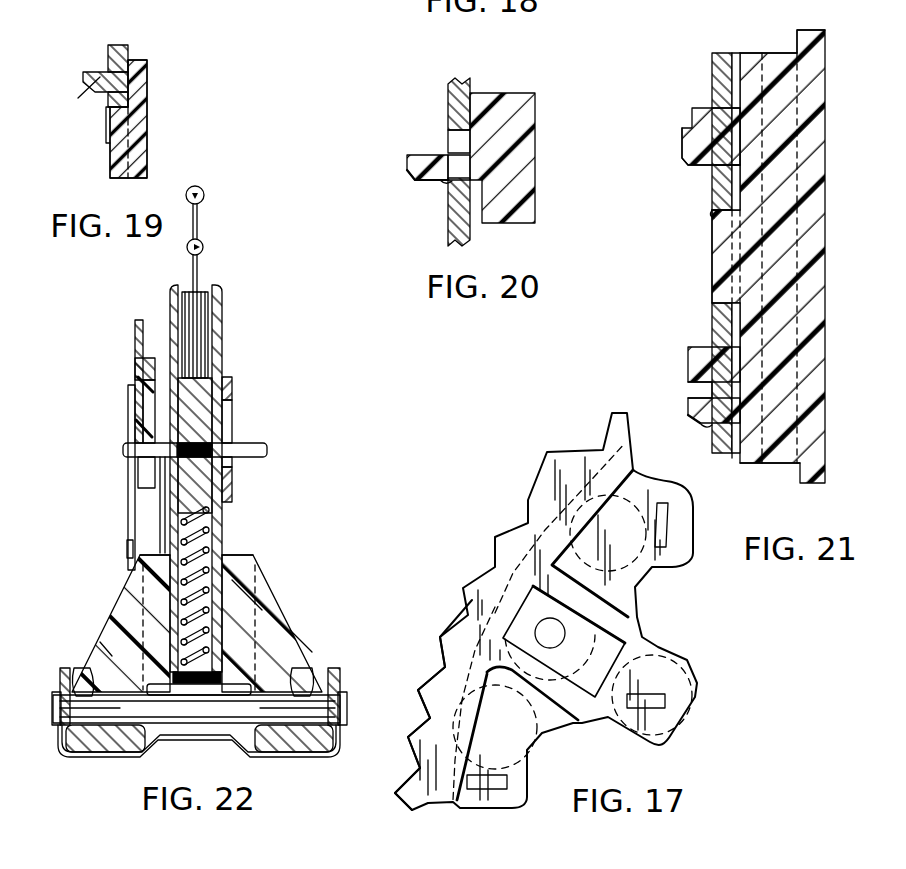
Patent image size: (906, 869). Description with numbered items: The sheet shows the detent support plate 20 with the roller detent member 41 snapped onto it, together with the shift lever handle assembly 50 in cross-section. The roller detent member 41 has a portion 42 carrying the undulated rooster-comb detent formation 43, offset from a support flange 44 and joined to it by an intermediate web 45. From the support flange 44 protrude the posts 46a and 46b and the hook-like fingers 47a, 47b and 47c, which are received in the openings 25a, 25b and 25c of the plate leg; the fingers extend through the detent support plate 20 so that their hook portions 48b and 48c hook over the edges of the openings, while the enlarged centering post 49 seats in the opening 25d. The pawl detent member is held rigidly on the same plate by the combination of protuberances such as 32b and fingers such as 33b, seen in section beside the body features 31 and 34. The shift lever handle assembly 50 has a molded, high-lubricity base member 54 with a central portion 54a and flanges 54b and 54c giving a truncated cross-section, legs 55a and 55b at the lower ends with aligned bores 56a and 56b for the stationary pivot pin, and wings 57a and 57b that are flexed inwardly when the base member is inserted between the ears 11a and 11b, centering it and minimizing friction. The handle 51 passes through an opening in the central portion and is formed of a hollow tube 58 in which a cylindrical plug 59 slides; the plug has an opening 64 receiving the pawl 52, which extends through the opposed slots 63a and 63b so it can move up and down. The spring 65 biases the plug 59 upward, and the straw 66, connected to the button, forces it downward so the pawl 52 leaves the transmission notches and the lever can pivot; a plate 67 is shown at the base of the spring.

In FIG. 22, the ear 11a is at (348, 707).
In FIG. 22, the ear 11b is at (54, 690).
In FIG. 19, the detent support plate 20 is at (129, 52).
In FIG. 20, the detent support plate 20 is at (447, 102).
In FIG. 21, the detent support plate 20 is at (710, 80).
In FIG. 21, the opening 25a is at (692, 132).
In FIG. 21, the opening 25b is at (706, 390).
In FIG. 20, the opening 25c is at (457, 142).
In FIG. 21, the opening 25d is at (712, 214).
In FIG. 19, the body member 31 is at (106, 170).
In FIG. 19, the protuberance 32b is at (106, 126).
In FIG. 19, the finger 33b is at (94, 71).
In FIG. 19, the wall 34 is at (142, 94).
In FIG. 17, the roller detent member 41 is at (515, 508).
In FIG. 21, the portion 42 is at (826, 254).
In FIG. 17, the detent formation 43 is at (486, 582).
In FIG. 21, the support flange 44 is at (754, 463).
In FIG. 17, the support flange 44 is at (678, 545).
In FIG. 21, the intermediate web 45 is at (774, 53).
In FIG. 21, the post 46a is at (683, 152).
In FIG. 21, the post 46b is at (690, 370).
In FIG. 21, the hook-like finger 47a is at (693, 118).
In FIG. 21, the hook-like finger 47b is at (690, 406).
In FIG. 20, the hook-like finger 47c is at (424, 160).
In FIG. 21, the hook portion 48b is at (703, 429).
In FIG. 20, the hook portion 48c is at (436, 190).
In FIG. 21, the centering post 49 is at (715, 266).
In FIG. 22, the shift lever handle assembly 50 is at (276, 534).
In FIG. 22, the handle 51 is at (225, 336).
In FIG. 22, the pawl 52 is at (268, 451).
In FIG. 22, the base member 54 is at (268, 630).
In FIG. 22, the central portion 54a is at (248, 605).
In FIG. 22, the flange 54b is at (300, 650).
In FIG. 22, the flange 54c is at (98, 655).
In FIG. 22, the leg 55a is at (300, 742).
In FIG. 22, the leg 55b is at (101, 753).
In FIG. 22, the bore 56a is at (316, 676).
In FIG. 22, the bore 56b is at (84, 668).
In FIG. 22, the wing 57a is at (342, 690).
In FIG. 22, the wing 57b is at (64, 668).
In FIG. 22, the hollow tube 58 is at (208, 370).
In FIG. 22, the cylindrical plug 59 is at (212, 426).
In FIG. 22, the slot 63a is at (232, 388).
In FIG. 22, the slot 63b is at (143, 410).
In FIG. 22, the opening 64 is at (233, 478).
In FIG. 22, the spring 65 is at (212, 552).
In FIG. 22, the straw 66 is at (205, 250).
In FIG. 22, the plate 67 is at (210, 724).